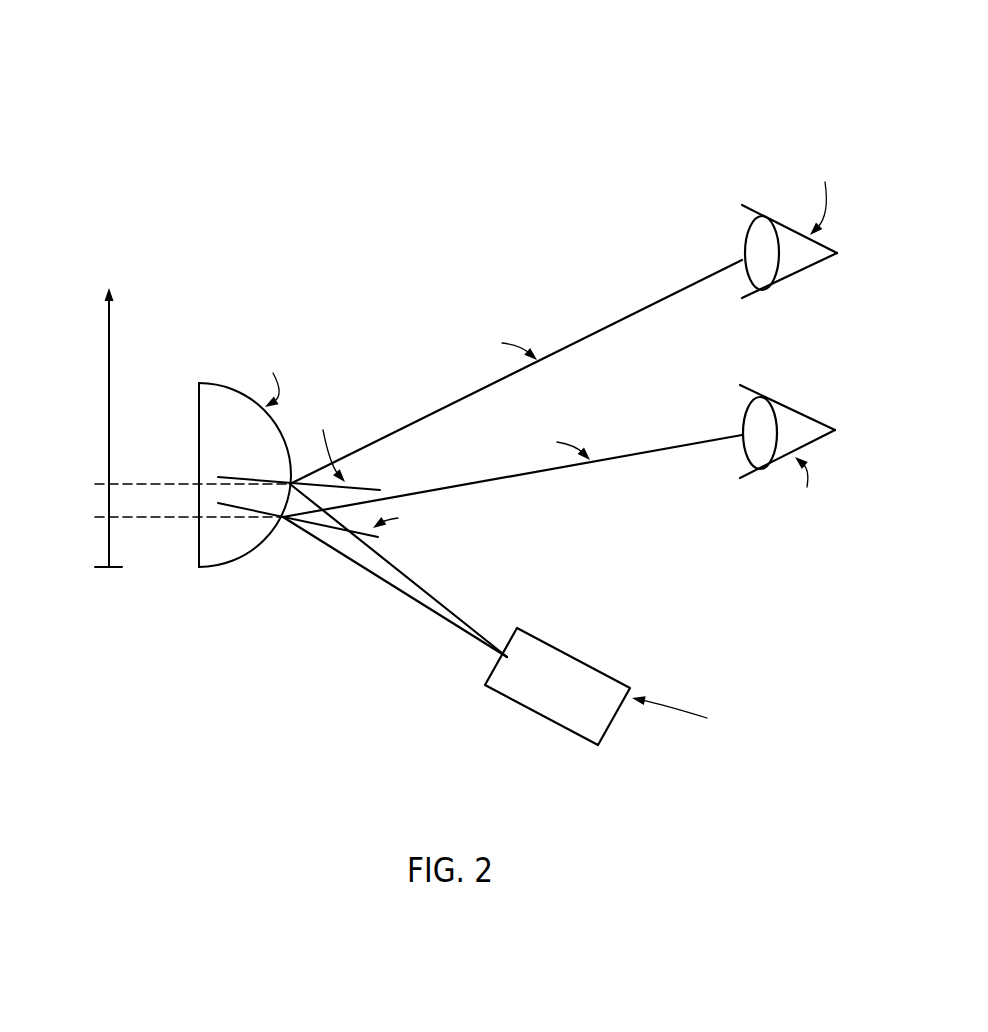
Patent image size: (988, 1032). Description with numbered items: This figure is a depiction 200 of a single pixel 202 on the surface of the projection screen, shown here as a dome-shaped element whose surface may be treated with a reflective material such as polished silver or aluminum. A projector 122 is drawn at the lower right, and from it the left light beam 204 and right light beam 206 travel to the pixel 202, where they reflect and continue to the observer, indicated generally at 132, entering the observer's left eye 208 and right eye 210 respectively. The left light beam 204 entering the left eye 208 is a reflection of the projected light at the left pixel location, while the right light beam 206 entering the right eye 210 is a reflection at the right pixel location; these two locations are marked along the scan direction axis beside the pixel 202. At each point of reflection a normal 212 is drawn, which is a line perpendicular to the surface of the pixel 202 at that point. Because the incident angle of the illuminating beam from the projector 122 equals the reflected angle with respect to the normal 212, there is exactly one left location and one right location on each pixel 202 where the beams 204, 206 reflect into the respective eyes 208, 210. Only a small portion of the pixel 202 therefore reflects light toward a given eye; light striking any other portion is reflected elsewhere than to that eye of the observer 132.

The depiction 200 is at (168, 45).
The observer 132 is at (759, 118).
The observer's right eye 210 is at (783, 278).
The observer's left eye 208 is at (800, 412).
The right light beam 206 is at (628, 317).
The left light beam 204 is at (683, 443).
The normal 212 is at (357, 487).
The pixel 202 is at (267, 535).
The projector 122 is at (562, 733).